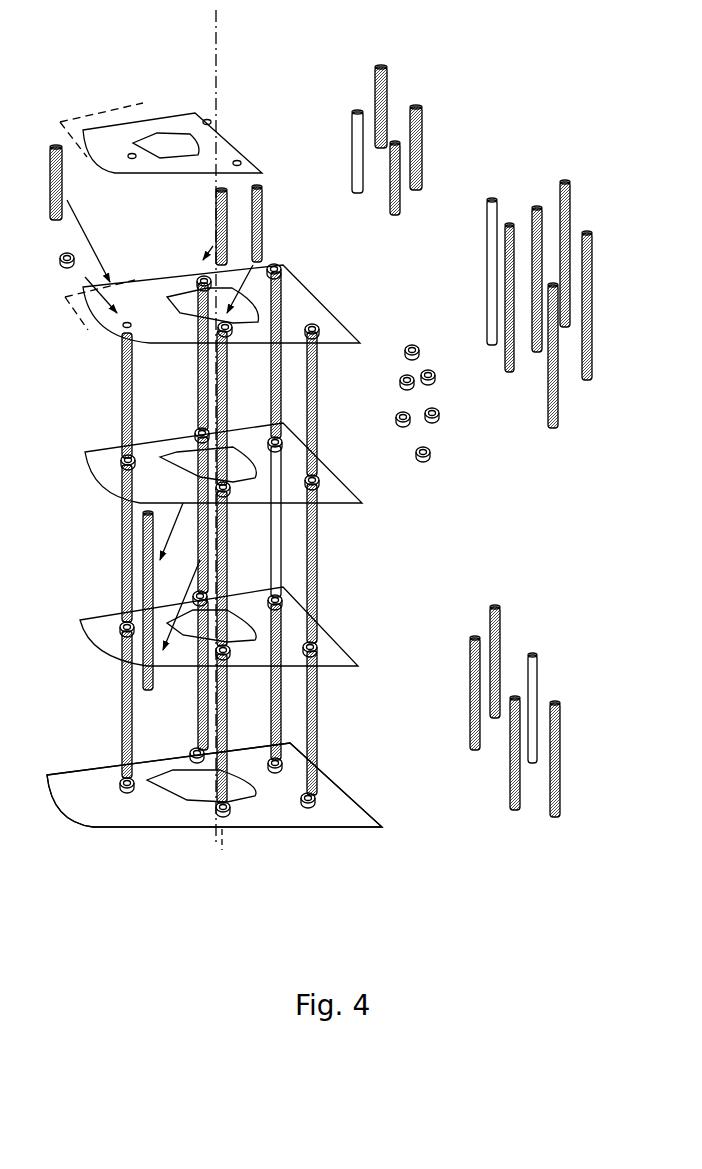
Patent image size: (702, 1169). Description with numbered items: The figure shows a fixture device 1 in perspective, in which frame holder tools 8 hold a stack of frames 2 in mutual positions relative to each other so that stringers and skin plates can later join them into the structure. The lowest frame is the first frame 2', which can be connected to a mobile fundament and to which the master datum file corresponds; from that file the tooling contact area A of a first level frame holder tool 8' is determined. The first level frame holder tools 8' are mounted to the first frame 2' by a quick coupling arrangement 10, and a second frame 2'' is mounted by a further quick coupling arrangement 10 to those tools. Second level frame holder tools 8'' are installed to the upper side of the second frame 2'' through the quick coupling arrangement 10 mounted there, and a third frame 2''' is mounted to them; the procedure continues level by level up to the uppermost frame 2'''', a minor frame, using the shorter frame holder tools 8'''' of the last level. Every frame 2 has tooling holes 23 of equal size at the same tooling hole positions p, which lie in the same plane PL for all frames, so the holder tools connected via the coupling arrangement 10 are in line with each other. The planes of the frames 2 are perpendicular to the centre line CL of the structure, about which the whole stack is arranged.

The fixture device 1 is at (505, 518).
The frame 2 is at (235, 465).
The first frame 2' is at (221, 796).
The second frame 2'' is at (233, 626).
The third frame 2''' is at (227, 460).
The frame 2'''' is at (181, 131).
The frame holder tool 8 is at (321, 417).
The first level frame holder tool 8' is at (335, 730).
The second level frame holder tool 8'' is at (229, 608).
The frame holder tool of the last level 8'''' is at (287, 224).
The quick coupling arrangement 10 is at (317, 313).
The tooling hole 23 is at (204, 117).
The tooling contact area A is at (102, 785).
The tooling hole position p is at (131, 150).
The plane PL is at (60, 122).
The centre line CL is at (217, 72).